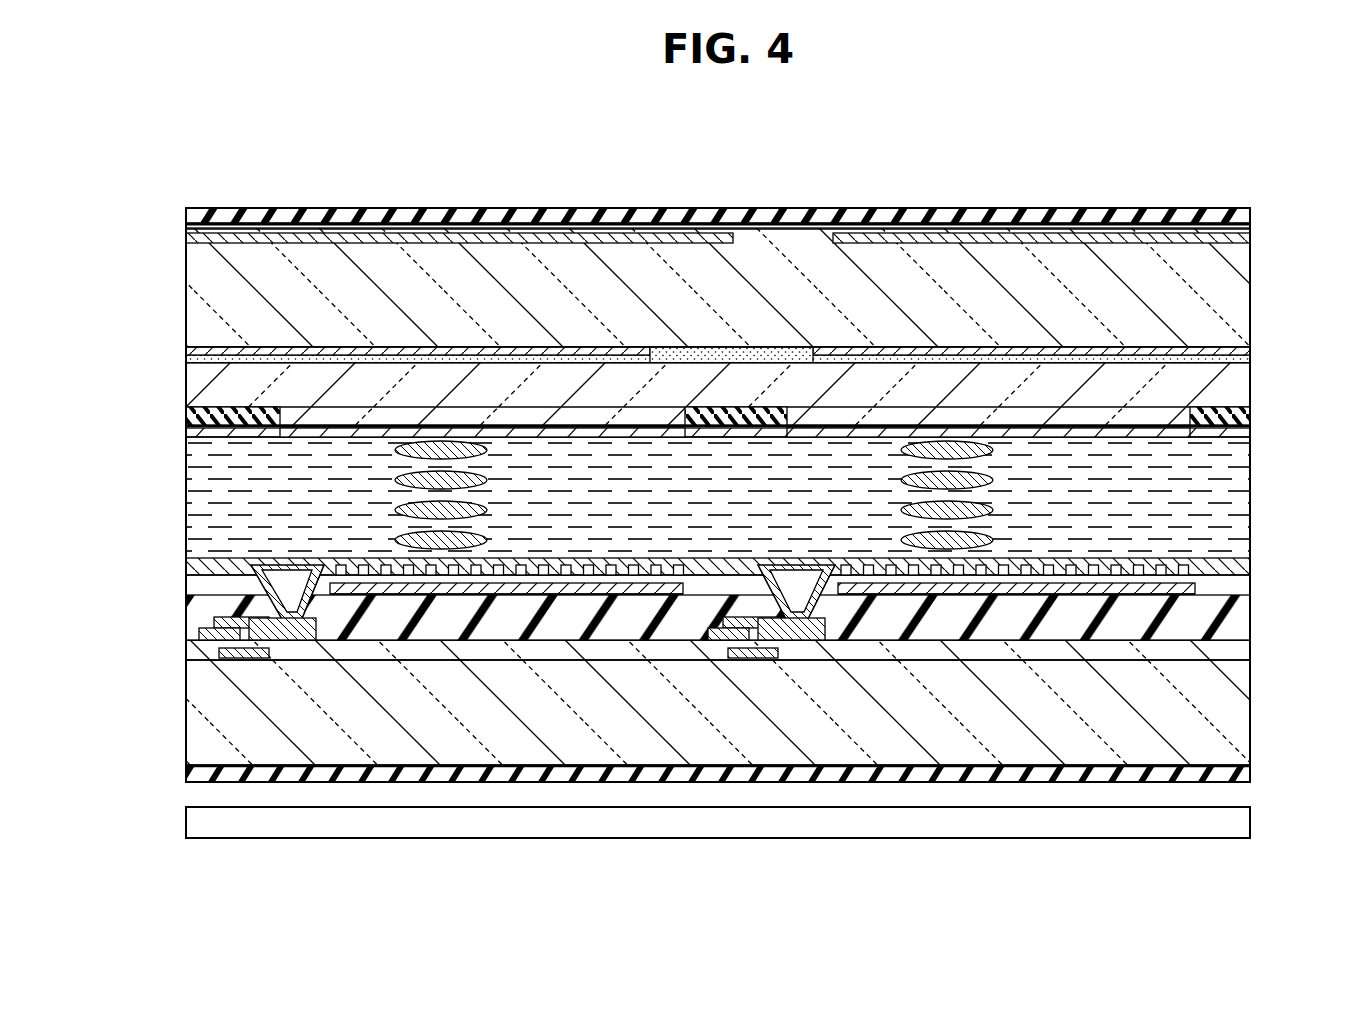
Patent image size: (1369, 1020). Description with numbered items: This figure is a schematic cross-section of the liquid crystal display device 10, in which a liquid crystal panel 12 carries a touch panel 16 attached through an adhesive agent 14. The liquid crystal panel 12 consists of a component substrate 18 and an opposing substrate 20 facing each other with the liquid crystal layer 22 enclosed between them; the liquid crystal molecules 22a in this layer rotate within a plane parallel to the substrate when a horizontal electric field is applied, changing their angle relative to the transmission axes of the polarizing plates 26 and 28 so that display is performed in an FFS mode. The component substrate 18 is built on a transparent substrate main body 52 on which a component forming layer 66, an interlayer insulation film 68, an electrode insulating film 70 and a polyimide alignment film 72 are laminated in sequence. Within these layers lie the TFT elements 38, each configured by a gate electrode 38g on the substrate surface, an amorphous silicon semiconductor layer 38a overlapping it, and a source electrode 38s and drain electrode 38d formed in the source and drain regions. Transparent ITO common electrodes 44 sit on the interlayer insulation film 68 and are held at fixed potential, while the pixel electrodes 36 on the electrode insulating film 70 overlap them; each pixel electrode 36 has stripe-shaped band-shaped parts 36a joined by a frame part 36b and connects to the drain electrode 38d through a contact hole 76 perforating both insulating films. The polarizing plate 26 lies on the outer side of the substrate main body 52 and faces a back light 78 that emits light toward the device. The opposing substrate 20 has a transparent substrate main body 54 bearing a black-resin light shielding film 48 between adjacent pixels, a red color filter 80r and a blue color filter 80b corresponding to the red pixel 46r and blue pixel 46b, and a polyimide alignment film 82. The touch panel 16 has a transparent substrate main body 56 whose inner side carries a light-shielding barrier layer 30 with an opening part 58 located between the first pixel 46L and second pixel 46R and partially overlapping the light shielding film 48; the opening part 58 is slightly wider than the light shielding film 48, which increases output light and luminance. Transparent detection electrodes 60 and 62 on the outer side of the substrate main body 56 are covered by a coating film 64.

The liquid crystal display device 10 is at (1256, 144).
The liquid crystal panel 12 is at (1311, 367).
The adhesive agent 14 is at (210, 352).
The touch panel 16 is at (1255, 223).
The component substrate 18 is at (1255, 562).
The opposing substrate 20 is at (1255, 367).
The liquid crystal layer 22 is at (210, 492).
The liquid crystal molecules 22a is at (486, 455).
The polarizing plate 26 is at (210, 773).
The polarizing plate 28 is at (205, 215).
The barrier layer 30 is at (497, 347).
The pixel electrode 36 is at (383, 489).
The band-shaped parts 36a is at (343, 566).
The frame part 36b is at (304, 565).
The TFT element 38 is at (640, 712).
The source electrode 38s is at (708, 640).
The gate electrode 38g is at (747, 656).
The semiconductor layer 38a is at (767, 640).
The drain electrode 38d is at (812, 637).
The common electrode 44 is at (500, 596).
The blue pixel 46b is at (690, 146).
The second pixel 46R is at (482, 116).
The red pixel 46r is at (1192, 146).
The first pixel 46L is at (985, 116).
The light shielding film 48 is at (720, 426).
The substrate main body 52 is at (210, 715).
The substrate main body 54 is at (210, 380).
The substrate main body 56 is at (210, 295).
The opening part 58 is at (657, 348).
The detection electrode 60 is at (612, 238).
The detection electrode 62 is at (1103, 238).
The coating film 64 is at (205, 234).
The component forming layer 66 is at (295, 653).
The interlayer insulation film 68 is at (210, 615).
The electrode insulating film 70 is at (225, 587).
The alignment film 72 is at (210, 560).
The contact hole 76 is at (810, 565).
The back light 78 is at (210, 822).
The blue color filter 80b is at (643, 428).
The red color filter 80r is at (833, 428).
The alignment film 82 is at (210, 415).